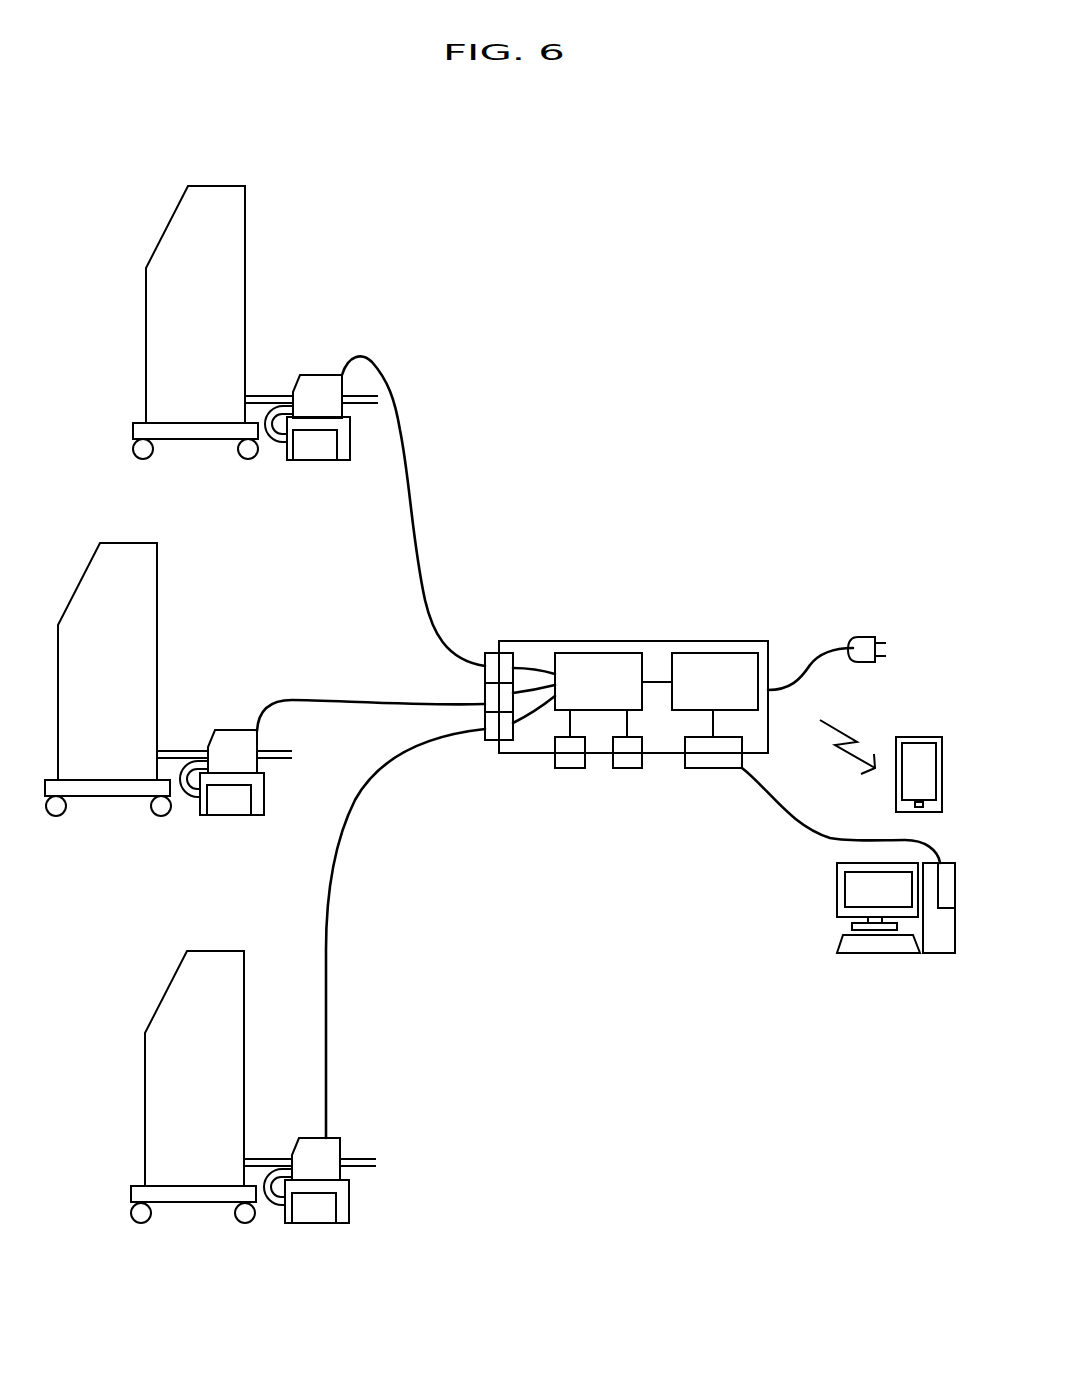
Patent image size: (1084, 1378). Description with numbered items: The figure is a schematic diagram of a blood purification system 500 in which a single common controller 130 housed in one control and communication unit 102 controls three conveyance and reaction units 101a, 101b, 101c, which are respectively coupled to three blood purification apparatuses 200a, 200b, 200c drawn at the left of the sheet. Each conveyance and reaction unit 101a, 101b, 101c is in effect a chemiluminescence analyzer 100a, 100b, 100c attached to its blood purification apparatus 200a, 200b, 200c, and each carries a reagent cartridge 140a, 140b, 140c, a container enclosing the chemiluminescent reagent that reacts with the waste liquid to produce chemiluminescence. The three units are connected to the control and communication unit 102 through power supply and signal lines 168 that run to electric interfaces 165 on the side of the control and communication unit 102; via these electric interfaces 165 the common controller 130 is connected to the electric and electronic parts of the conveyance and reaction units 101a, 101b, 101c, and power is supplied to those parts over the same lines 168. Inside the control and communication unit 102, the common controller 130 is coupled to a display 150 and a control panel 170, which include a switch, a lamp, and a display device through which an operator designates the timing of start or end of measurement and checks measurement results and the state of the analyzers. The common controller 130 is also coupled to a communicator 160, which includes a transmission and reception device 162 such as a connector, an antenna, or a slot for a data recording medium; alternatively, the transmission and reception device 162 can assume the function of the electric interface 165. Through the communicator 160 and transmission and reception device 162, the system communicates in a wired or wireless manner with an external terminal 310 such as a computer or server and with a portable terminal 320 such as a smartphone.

The blood purification system 500 is at (830, 125).
The blood purification apparatus 200a is at (226, 174).
The blood purification apparatus 200b is at (142, 532).
The blood purification apparatus 200c is at (226, 939).
The chemiluminescence analyzer 100a is at (321, 410).
The chemiluminescence analyzer 100b is at (234, 765).
The chemiluminescence analyzer 100c is at (348, 1174).
The conveyance and reaction unit 101a is at (316, 365).
The conveyance and reaction unit 101b is at (231, 720).
The conveyance and reaction unit 101c is at (348, 1129).
The reagent cartridge 140a is at (317, 452).
The reagent cartridge 140b is at (228, 808).
The reagent cartridge 140c is at (316, 1216).
The power supply and signal lines 168 is at (422, 547).
The control and communication unit 102 is at (658, 615).
The electric interface 165 is at (491, 758).
The common controller 130 is at (581, 696).
The communicator 160 is at (698, 696).
The display 150 is at (566, 770).
The control panel 170 is at (622, 770).
The transmission and reception device 162 is at (714, 770).
The portable terminal 320 is at (926, 737).
The external terminal 310 is at (852, 976).